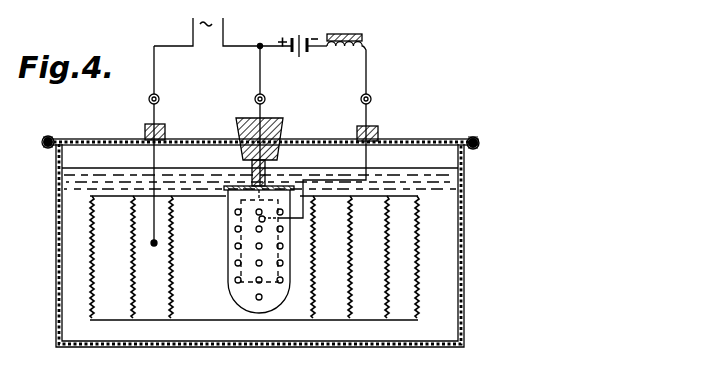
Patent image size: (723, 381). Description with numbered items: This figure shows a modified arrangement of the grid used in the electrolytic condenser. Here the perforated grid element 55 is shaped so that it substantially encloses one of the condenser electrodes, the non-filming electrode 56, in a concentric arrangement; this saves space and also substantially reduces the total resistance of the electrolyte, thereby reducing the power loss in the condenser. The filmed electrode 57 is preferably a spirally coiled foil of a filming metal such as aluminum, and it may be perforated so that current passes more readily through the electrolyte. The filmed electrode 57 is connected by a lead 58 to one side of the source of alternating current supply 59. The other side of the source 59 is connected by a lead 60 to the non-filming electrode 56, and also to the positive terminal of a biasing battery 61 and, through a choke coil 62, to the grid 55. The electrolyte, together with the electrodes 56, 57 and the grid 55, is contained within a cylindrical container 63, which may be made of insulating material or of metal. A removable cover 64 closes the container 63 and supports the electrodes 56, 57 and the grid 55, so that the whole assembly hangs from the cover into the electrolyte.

The perforated grid element 55 is at (283, 290).
The non-filming electrode 56 is at (247, 283).
The filmed electrode 57 is at (389, 295).
The lead 58 is at (151, 76).
The source of alternating current supply 59 is at (223, 40).
The lead 60 is at (259, 57).
The biasing battery 61 is at (307, 57).
The choke coil 62 is at (365, 49).
The cylindrical container 63 is at (432, 340).
The removable cover 64 is at (418, 139).